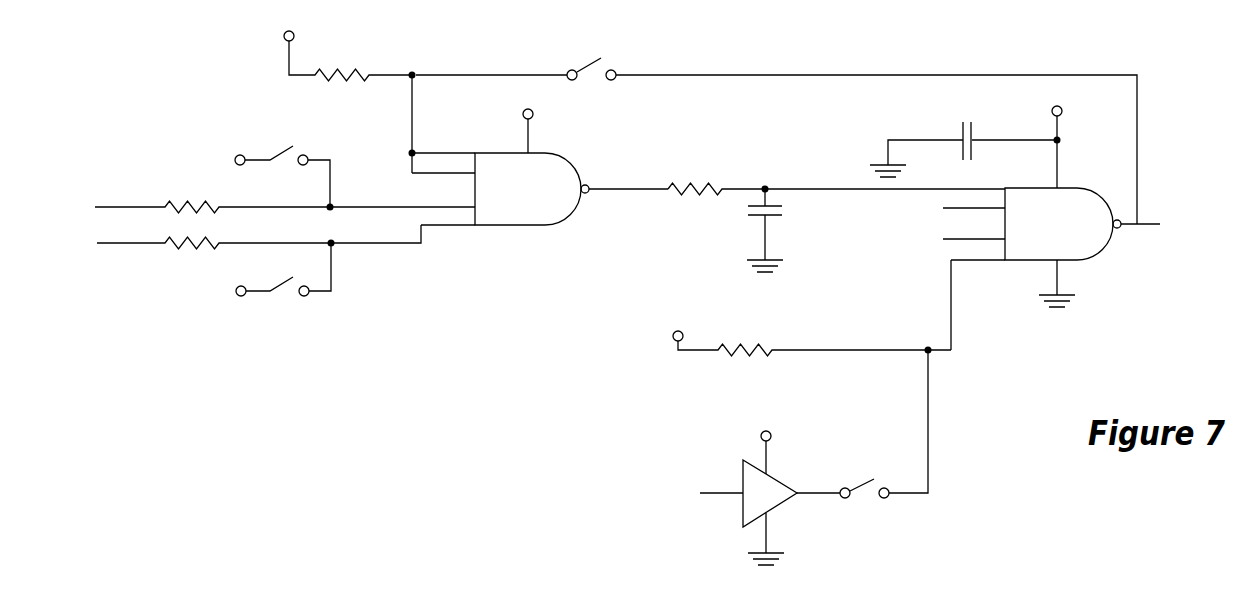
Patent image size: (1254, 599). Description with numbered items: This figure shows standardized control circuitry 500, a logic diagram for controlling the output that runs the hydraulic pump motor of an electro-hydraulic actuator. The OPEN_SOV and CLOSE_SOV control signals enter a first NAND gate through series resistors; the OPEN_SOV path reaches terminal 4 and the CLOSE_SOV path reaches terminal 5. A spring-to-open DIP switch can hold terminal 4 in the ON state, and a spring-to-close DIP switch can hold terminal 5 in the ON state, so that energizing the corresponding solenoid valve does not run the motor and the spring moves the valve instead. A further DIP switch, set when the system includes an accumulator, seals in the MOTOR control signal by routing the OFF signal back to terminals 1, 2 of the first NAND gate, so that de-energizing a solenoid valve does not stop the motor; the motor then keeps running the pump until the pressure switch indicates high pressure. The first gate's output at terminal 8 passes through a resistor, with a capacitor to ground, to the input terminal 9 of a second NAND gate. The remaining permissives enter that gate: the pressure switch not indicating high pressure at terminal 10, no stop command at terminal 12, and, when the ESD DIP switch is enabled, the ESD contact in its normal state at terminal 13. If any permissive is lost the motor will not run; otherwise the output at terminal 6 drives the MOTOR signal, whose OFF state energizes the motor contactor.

The standardized control circuitry 500 is at (194, 60).
The input terminal of NAND gate U11A 1 is at (443, 147).
The input terminal of NAND gate U11A 2 is at (443, 167).
The input terminal of NAND gate U11A 4 is at (402, 200).
The input terminal of NAND gate U11A 5 is at (448, 219).
The output terminal of NAND gate 8 is at (624, 185).
The U11B input pin 9 is at (885, 183).
The input terminal of NAND gate U11B 10 is at (974, 202).
The input terminal of NAND gate U11B 12 is at (974, 234).
The input terminal of NAND gate U11B 13 is at (978, 300).
The output terminal of NAND gate 6 is at (1136, 220).